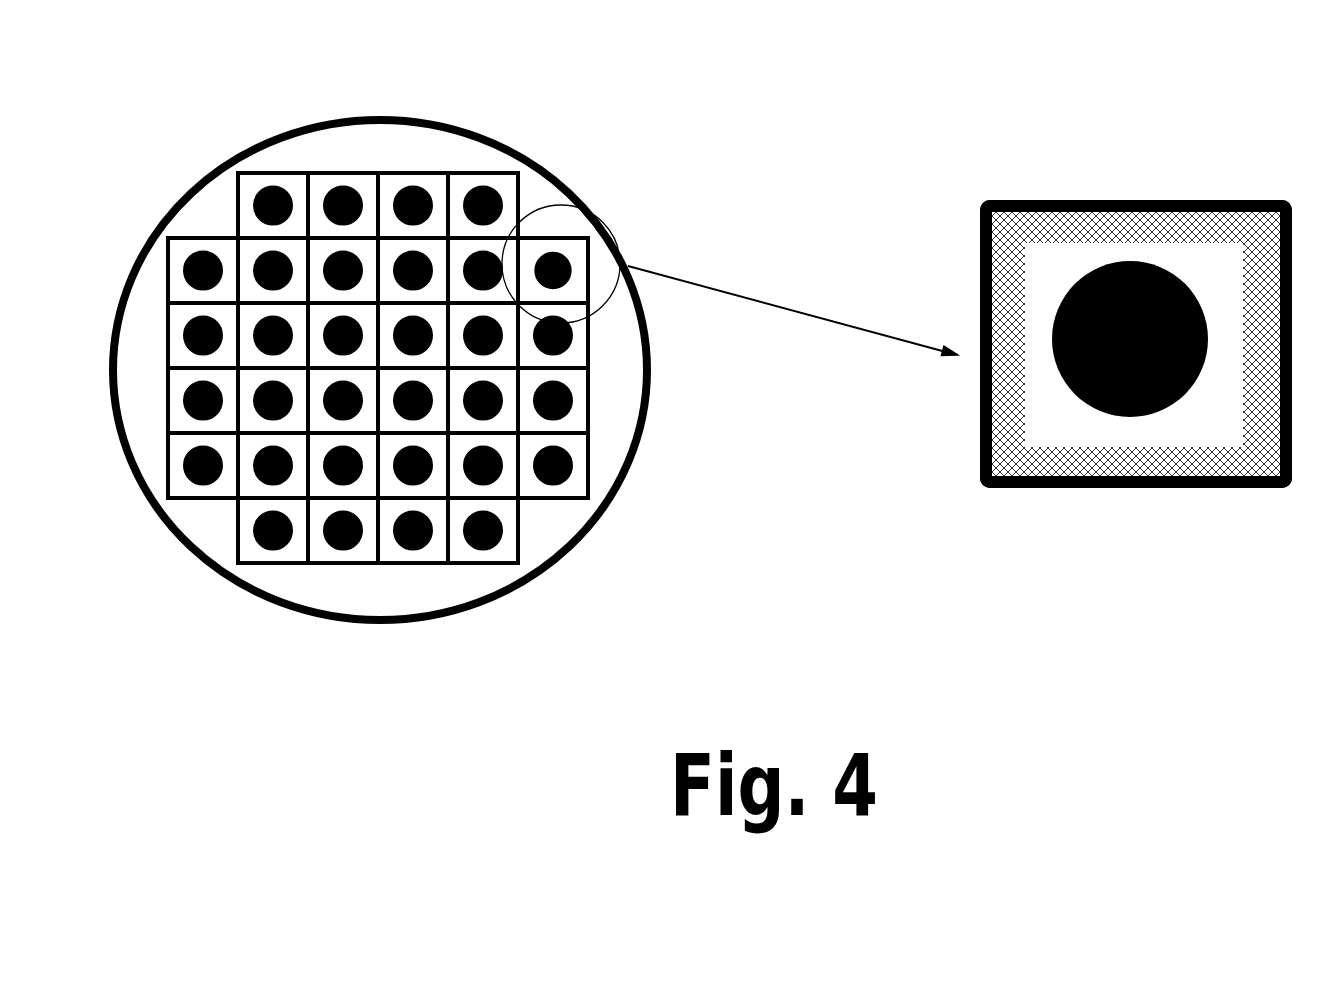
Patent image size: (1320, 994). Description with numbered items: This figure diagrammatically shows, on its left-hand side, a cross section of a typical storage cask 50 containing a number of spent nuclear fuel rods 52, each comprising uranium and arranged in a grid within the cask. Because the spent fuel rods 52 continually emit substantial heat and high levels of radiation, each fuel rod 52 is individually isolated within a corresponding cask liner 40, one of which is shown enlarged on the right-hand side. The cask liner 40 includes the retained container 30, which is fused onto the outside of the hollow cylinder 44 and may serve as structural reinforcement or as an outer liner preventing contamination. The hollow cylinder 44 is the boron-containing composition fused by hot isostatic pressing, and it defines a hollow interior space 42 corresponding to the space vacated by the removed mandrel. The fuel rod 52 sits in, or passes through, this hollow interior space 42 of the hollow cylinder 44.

The storage cask 50 is at (458, 132).
The nuclear fuel rod 52 is at (566, 256).
The cask liner 40 is at (590, 262).
The container 30 is at (1073, 200).
The hollow cylinder 44 is at (1160, 227).
The hollow interior space 42 is at (1078, 427).